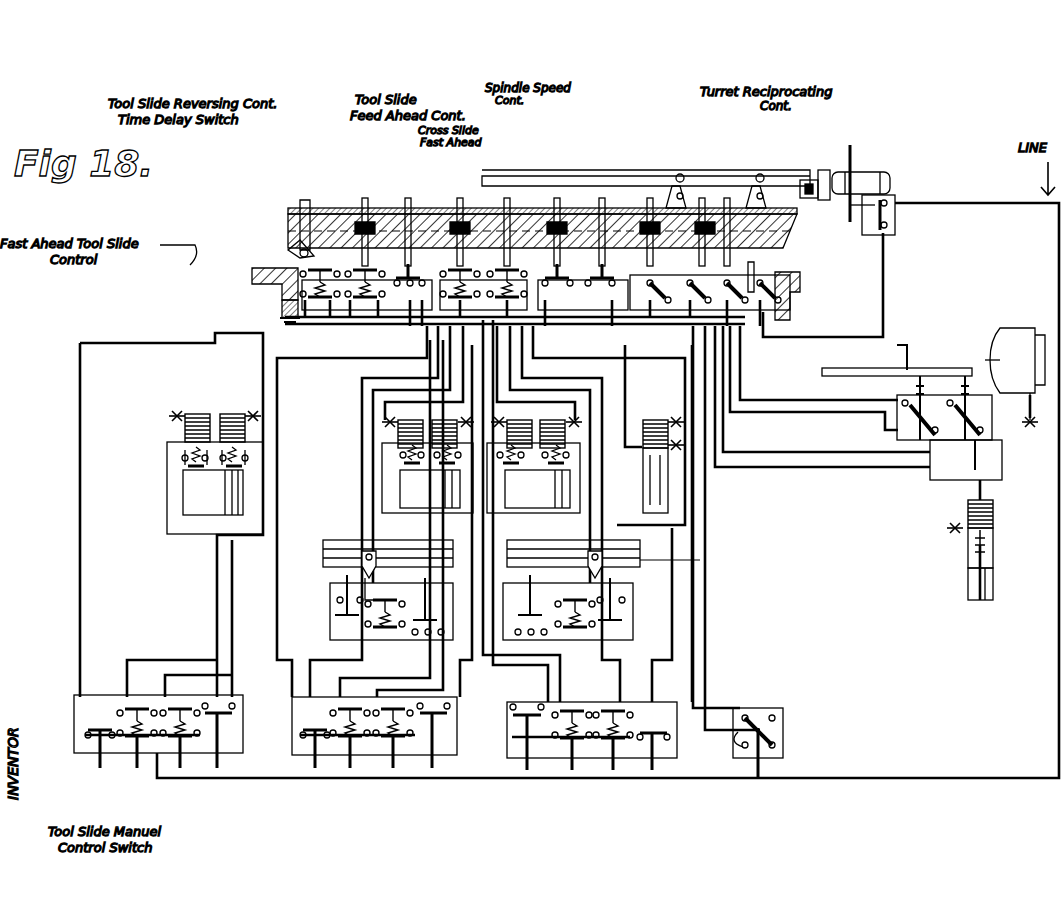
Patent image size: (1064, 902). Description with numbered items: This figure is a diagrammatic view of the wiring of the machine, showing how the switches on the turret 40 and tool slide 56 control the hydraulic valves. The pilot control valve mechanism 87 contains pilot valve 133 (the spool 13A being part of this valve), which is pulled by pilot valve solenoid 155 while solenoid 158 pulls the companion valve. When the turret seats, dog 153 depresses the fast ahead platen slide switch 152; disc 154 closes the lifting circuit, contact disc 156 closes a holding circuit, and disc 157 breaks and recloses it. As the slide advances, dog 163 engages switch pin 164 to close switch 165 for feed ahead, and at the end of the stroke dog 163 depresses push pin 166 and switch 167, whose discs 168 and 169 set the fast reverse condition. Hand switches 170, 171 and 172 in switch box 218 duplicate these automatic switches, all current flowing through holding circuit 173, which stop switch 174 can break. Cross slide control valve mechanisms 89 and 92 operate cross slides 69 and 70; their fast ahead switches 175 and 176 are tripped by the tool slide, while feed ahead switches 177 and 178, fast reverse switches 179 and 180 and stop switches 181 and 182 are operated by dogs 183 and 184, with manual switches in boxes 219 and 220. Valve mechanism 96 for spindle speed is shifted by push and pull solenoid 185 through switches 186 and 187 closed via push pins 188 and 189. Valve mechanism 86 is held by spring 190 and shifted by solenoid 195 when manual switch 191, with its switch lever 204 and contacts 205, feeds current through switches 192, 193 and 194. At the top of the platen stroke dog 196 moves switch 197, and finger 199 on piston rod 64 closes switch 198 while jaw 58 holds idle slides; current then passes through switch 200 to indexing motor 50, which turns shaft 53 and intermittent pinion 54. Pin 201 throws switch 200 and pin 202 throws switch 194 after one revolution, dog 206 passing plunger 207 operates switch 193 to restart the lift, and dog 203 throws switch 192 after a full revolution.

The turret 40 is at (288, 222).
The tool slide 56 is at (595, 200).
The indexing motor 50 is at (1023, 327).
The shaft 53 is at (896, 352).
The intermittent pinion 54 is at (822, 372).
The jaw 58 is at (830, 195).
The piston rod 64 is at (880, 173).
The cross slide 69 is at (332, 530).
The cross slide 70 is at (642, 539).
The valve mechanism 86 is at (968, 587).
The pilot control valve mechanism 87 is at (198, 507).
The cross slide control valve mechanism 89 is at (405, 480).
The cross slide control valve mechanism 92 is at (550, 492).
The valve mechanism 96 is at (700, 498).
The valve spool 13A is at (232, 474).
The pilot valve 133 is at (190, 473).
The fast ahead platen slide switch 152 is at (300, 255).
The dog 153 is at (290, 248).
The disc 154 is at (280, 310).
The pilot valve solenoid 155 is at (191, 415).
The contact disc 156 is at (190, 472).
The disc 157 is at (280, 290).
The solenoid 158 is at (228, 415).
The dog 163 is at (744, 194).
The switch pin 164 is at (395, 200).
The switch 165 is at (405, 203).
The push pin 166 is at (360, 197).
The switch 167 is at (377, 205).
The disc 168 is at (325, 270).
The disc 169 is at (370, 268).
The hand switch 170 is at (180, 762).
The hand switch 171 is at (220, 760).
The hand switch 172 is at (137, 762).
The holding circuit 173 is at (80, 380).
The stop switch 174 is at (100, 762).
The cross slide fast ahead switch 175 is at (488, 200).
The cross slide fast ahead switch 176 is at (463, 195).
The feed ahead switch 177 is at (388, 552).
The feed ahead switch 178 is at (573, 552).
The fast reverse switch 179 is at (395, 615).
The fast reverse switch 180 is at (612, 618).
The stop switch 181 is at (330, 606).
The stop switch 182 is at (612, 595).
The dog 183 is at (342, 553).
The dog 184 is at (696, 549).
The push and pull solenoid 185 is at (652, 420).
The switch 186 is at (555, 200).
The switch 187 is at (595, 188).
The push pin 188 is at (598, 200).
The push pin 189 is at (610, 198).
The spring 190 is at (968, 554).
The manual switch 191 is at (785, 748).
The switch 192 is at (645, 200).
The switch 193 is at (670, 193).
The switch 194 is at (975, 455).
The solenoid 195 is at (968, 506).
The dog 196 is at (840, 266).
The switch 197 is at (755, 272).
The switch 198 is at (895, 200).
The finger 199 is at (847, 171).
The switch 200 is at (897, 437).
The pin 201 is at (923, 376).
The pin 202 is at (970, 376).
The dog 203 is at (580, 188).
The switch lever 204 is at (775, 730).
The contacts 205 is at (735, 725).
The dog 206 is at (760, 178).
The plunger 207 is at (698, 200).
The switch box 218 is at (95, 705).
The switch box 219 is at (335, 760).
The switch box 220 is at (522, 745).